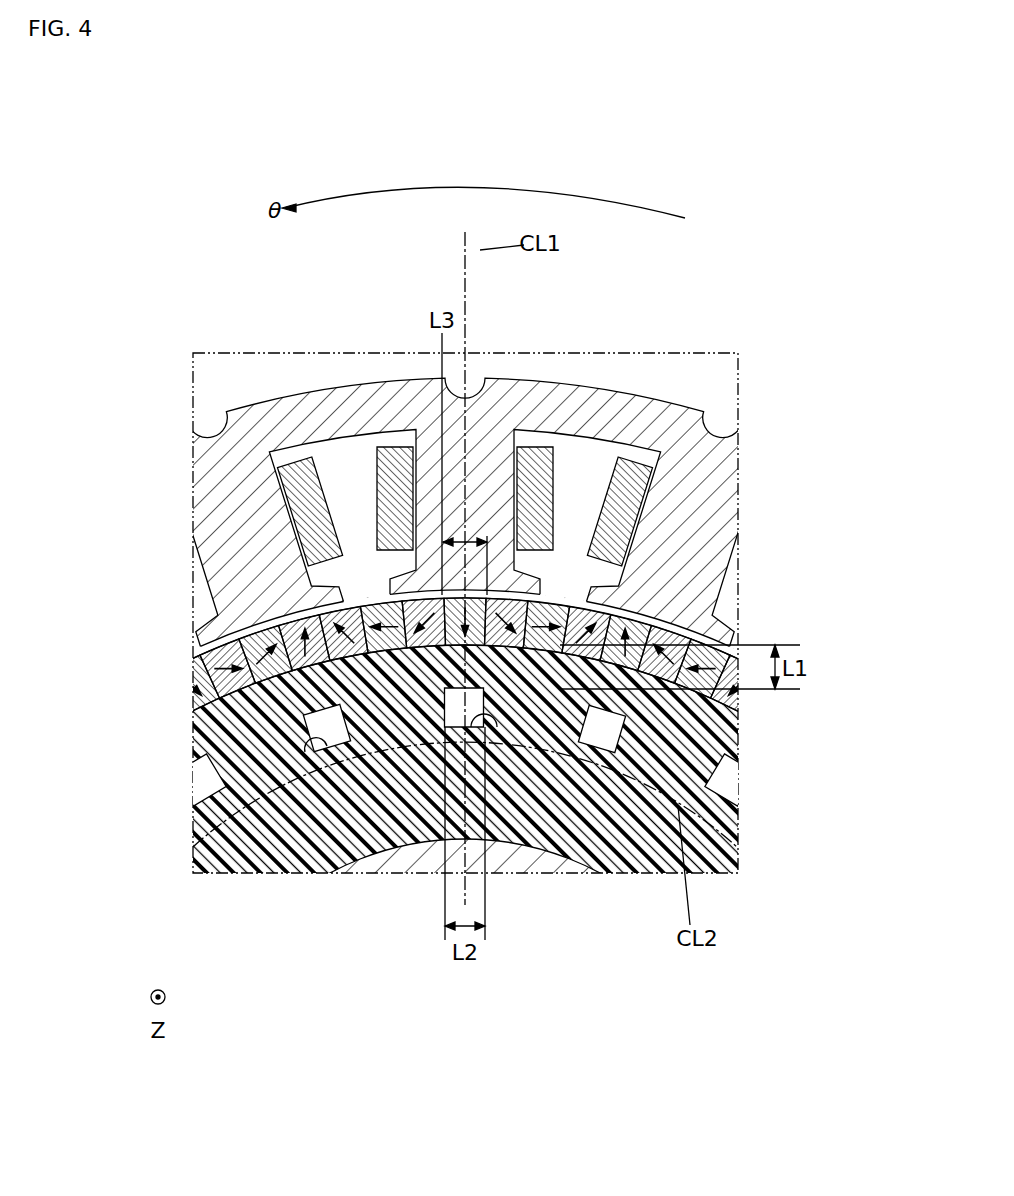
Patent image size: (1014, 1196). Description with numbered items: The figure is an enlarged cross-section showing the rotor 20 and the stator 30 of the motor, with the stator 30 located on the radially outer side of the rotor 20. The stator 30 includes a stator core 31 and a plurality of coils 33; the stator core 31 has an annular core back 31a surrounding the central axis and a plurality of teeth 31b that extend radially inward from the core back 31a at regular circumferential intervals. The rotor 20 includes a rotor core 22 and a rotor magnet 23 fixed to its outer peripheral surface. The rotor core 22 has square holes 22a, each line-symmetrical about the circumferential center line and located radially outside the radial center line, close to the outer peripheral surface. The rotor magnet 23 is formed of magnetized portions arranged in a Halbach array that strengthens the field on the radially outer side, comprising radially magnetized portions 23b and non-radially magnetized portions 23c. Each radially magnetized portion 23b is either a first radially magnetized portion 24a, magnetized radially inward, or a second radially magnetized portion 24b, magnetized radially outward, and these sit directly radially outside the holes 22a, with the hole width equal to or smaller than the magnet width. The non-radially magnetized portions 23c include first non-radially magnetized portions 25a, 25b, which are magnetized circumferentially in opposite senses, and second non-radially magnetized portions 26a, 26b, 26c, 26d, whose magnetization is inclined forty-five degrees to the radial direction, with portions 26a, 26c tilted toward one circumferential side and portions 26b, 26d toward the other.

The rotor 20 is at (558, 884).
The rotor core 22 is at (590, 832).
The hole 22a is at (318, 752).
The rotor magnet 23 is at (186, 690).
The radially magnetized portion 23b is at (400, 525).
The non-radially magnetized portion 23c is at (705, 728).
The first radially magnetized portion 24a is at (484, 585).
The second radially magnetized portion 24b is at (300, 668).
The first non-radially magnetized portion 25a is at (388, 652).
The first non-radially magnetized portion 25b is at (580, 615).
The second non-radially magnetized portion 26a is at (430, 643).
The second non-radially magnetized portion 26b is at (340, 612).
The second non-radially magnetized portion 26c is at (300, 640).
The second non-radially magnetized portion 26d is at (512, 603).
The stator 30 is at (418, 370).
The stator core 31 is at (465, 460).
The core back 31a is at (334, 403).
The tooth 31b is at (330, 425).
The coil 33 is at (633, 468).